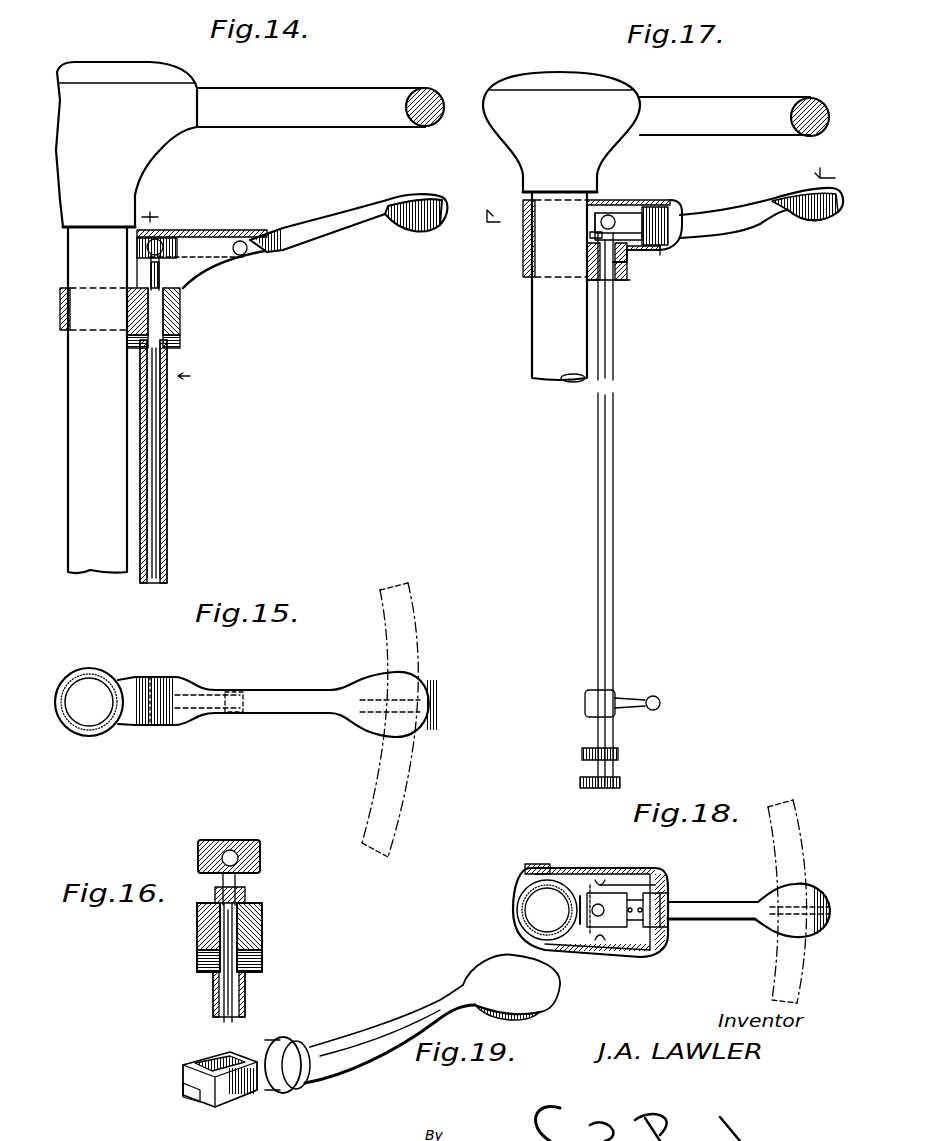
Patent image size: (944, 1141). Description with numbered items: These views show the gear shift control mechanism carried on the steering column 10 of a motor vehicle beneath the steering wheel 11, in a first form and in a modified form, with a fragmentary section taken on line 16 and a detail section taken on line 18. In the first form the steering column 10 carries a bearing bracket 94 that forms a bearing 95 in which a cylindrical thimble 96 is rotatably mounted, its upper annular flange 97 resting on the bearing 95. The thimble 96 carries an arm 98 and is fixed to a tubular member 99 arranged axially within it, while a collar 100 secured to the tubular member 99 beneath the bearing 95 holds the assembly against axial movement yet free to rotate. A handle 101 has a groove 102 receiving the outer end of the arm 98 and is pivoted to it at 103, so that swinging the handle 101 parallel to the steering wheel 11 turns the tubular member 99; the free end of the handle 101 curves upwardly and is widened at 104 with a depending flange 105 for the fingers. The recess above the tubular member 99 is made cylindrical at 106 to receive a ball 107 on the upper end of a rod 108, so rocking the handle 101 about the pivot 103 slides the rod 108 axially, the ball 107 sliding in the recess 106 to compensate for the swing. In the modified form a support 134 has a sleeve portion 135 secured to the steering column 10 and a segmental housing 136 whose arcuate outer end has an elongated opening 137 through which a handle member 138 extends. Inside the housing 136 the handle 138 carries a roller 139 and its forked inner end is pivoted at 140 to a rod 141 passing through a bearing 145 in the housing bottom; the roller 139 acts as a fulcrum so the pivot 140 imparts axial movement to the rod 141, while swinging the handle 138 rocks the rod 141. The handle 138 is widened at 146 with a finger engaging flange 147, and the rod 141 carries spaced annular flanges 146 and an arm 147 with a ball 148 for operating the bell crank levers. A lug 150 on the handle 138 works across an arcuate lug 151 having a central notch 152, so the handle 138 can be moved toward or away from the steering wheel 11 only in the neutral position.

In FIG. 14, the steering column 10 is at (97, 400).
In FIG. 15, the steering column 10 is at (85, 670).
In FIG. 17, the steering column 10 is at (532, 338).
In FIG. 14, the steering wheel 11 is at (396, 82).
In FIG. 15, the steering wheel 11 is at (428, 630).
In FIG. 17, the steering wheel 11 is at (775, 98).
In FIG. 18, the steering wheel 11 is at (797, 812).
In FIG. 14, the section line 16— 16 is at (182, 293).
In FIG. 17, the section line 18— 18 is at (655, 185).
In FIG. 14, the bearing bracket 94 is at (64, 332).
In FIG. 15, the bearing bracket 94 is at (106, 670).
In FIG. 14, the bearing 95 is at (180, 312).
In FIG. 16, the bearing 95 is at (262, 920).
In FIG. 14, the cylindrical thimble 96 is at (182, 322).
In FIG. 16, the cylindrical thimble 96 is at (197, 924).
In FIG. 14, the annular flange 97 is at (183, 287).
In FIG. 16, the annular flange 97 is at (246, 903).
In FIG. 14, the arm 98 is at (205, 280).
In FIG. 15, the arm 98 is at (195, 712).
In FIG. 14, the tubular member 99 is at (167, 400).
In FIG. 14, the collar 100 is at (181, 348).
In FIG. 16, the collar 100 is at (262, 964).
In FIG. 14, the handle 101 is at (288, 227).
In FIG. 15, the handle 101 is at (276, 690).
In FIG. 14, the groove 102 is at (215, 237).
In FIG. 14, the pivot 103 is at (246, 256).
In FIG. 15, the pivot 103 is at (228, 714).
In FIG. 14, the widened free end 104 is at (422, 184).
In FIG. 15, the widened free end 104 is at (378, 690).
In FIG. 14, the depending flange 105 is at (420, 230).
In FIG. 15, the depending flange 105 is at (385, 722).
In FIG. 14, the cylindrical recess 106 is at (180, 237).
In FIG. 16, the cylindrical recess 106 is at (262, 857).
In FIG. 14, the ball 107 is at (146, 247).
In FIG. 15, the ball 107 is at (152, 676).
In FIG. 16, the ball 107 is at (233, 850).
In FIG. 14, the rod 108 is at (155, 432).
In FIG. 16, the rod 108 is at (235, 936).
In FIG. 17, the support 134 is at (628, 280).
In FIG. 18, the support 134 is at (655, 957).
In FIG. 17, the sleeve portion 135 is at (523, 268).
In FIG. 18, the sleeve portion 135 is at (520, 903).
In FIG. 17, the segmental housing 136 is at (650, 200).
In FIG. 18, the segmental housing 136 is at (605, 952).
In FIG. 17, the circumferentially elongated opening 137 is at (690, 205).
In FIG. 18, the circumferentially elongated opening 137 is at (665, 882).
In FIG. 17, the handle member 138 is at (727, 223).
In FIG. 18, the handle member 138 is at (711, 906).
In FIG. 19, the handle member 138 is at (381, 1024).
In FIG. 17, the roller 139 is at (660, 255).
In FIG. 18, the roller 139 is at (660, 935).
In FIG. 19, the roller 139 is at (285, 1038).
In FIG. 17, the pivot 140 is at (610, 212).
In FIG. 18, the pivot 140 is at (620, 893).
In FIG. 19, the pivot 140 is at (225, 1092).
In FIG. 17, the rod 141 is at (615, 355).
In FIG. 18, the rod 141 is at (592, 962).
In FIG. 17, the bearing 145 is at (592, 297).
In FIG. 17, the widened free end / annular flanges 146 is at (620, 782).
In FIG. 18, the widened free end / annular flanges 146 is at (770, 924).
In FIG. 19, the widened free end / annular flanges 146 is at (545, 1000).
In FIG. 17, the finger engaging flange / arm 147 is at (817, 228).
In FIG. 18, the finger engaging flange / arm 147 is at (784, 889).
In FIG. 19, the finger engaging flange / arm 147 is at (526, 1015).
In FIG. 17, the ball 148 is at (660, 698).
In FIG. 17, the lug 150 is at (600, 222).
In FIG. 18, the lug 150 is at (592, 880).
In FIG. 19, the lug 150 is at (200, 1098).
In FIG. 18, the arcuate lug 151 is at (572, 944).
In FIG. 17, the central notch 152 is at (592, 236).
In FIG. 18, the central notch 152 is at (572, 908).